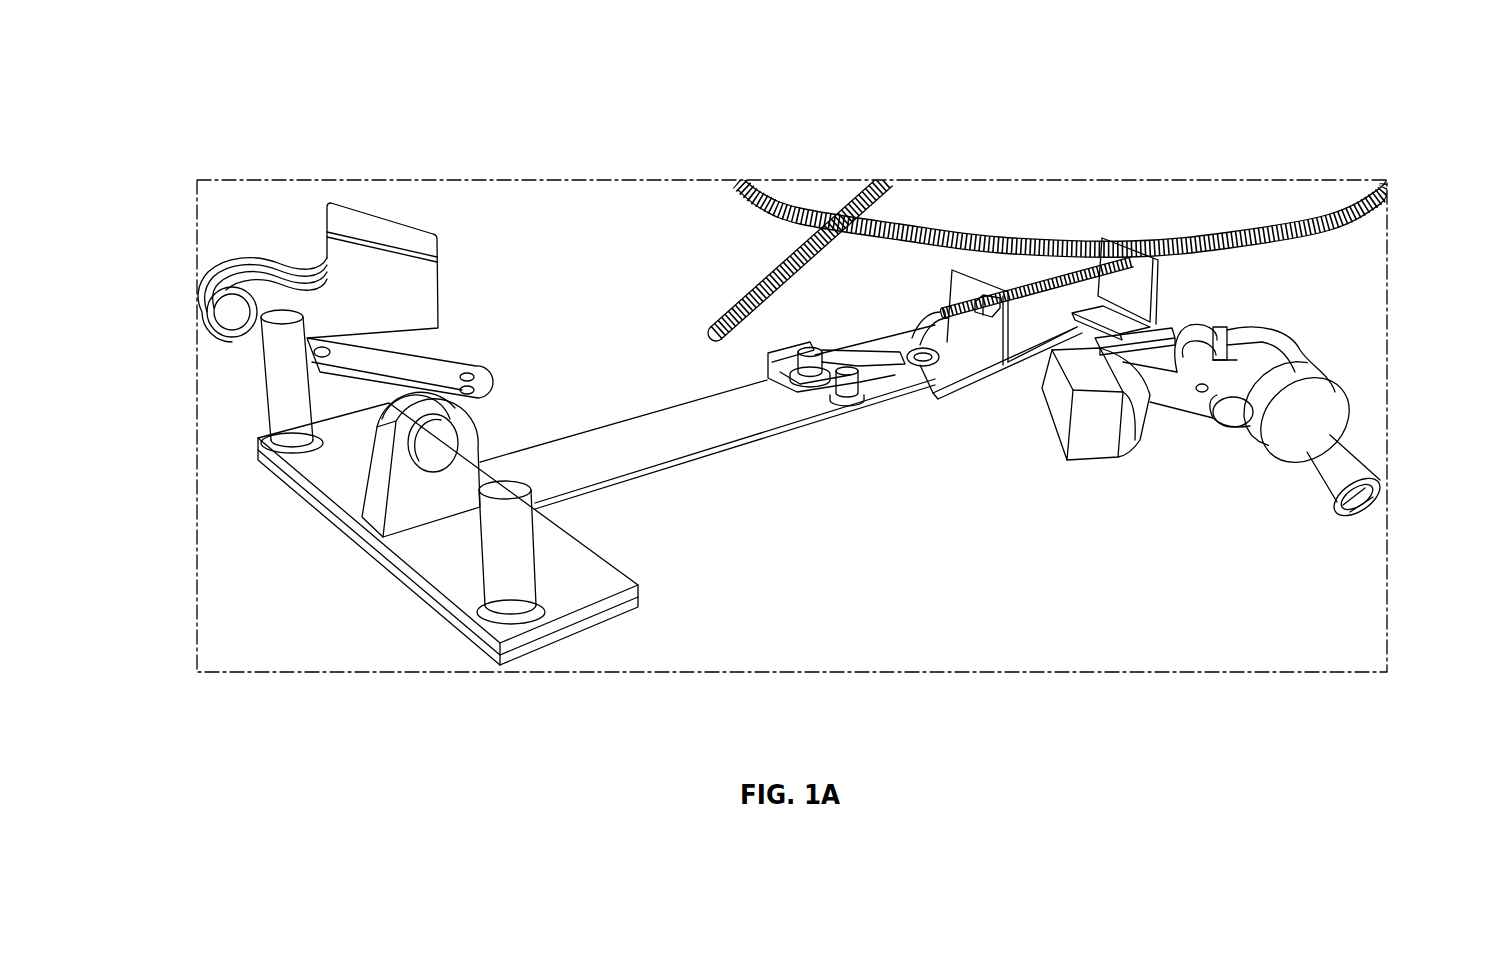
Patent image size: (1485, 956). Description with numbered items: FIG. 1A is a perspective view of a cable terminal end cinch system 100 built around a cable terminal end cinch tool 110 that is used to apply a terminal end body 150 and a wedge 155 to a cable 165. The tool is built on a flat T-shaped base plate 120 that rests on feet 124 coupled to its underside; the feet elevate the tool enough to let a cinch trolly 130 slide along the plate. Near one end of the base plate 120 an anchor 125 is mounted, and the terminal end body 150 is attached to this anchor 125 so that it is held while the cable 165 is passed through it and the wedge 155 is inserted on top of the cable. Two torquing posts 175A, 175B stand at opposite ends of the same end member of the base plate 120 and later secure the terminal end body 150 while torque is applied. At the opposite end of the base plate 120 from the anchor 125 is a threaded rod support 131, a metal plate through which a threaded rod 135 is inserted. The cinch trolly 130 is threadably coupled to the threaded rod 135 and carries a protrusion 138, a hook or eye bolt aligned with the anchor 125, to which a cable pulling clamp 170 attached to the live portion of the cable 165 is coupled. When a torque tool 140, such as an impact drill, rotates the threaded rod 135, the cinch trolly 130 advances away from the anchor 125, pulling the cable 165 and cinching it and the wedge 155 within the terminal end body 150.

The cable terminal end cinch system 100 is at (180, 98).
The cable terminal end cinch tool 110 is at (597, 580).
The base plate 120 is at (710, 432).
The feet 124 is at (568, 628).
The anchor 125 is at (407, 478).
The cinch trolly 130 is at (1000, 338).
The threaded rod support 131 is at (1130, 300).
The threaded rod 135 is at (1030, 278).
The protrusion 138 is at (938, 330).
The torque tool 140 is at (1327, 397).
The terminal end body 150 is at (380, 233).
The wedge 155 is at (450, 382).
The cable 165 is at (755, 290).
The cable pulling clamp 170 is at (850, 400).
The torquing post 175A is at (498, 568).
The torquing post 175B is at (275, 368).